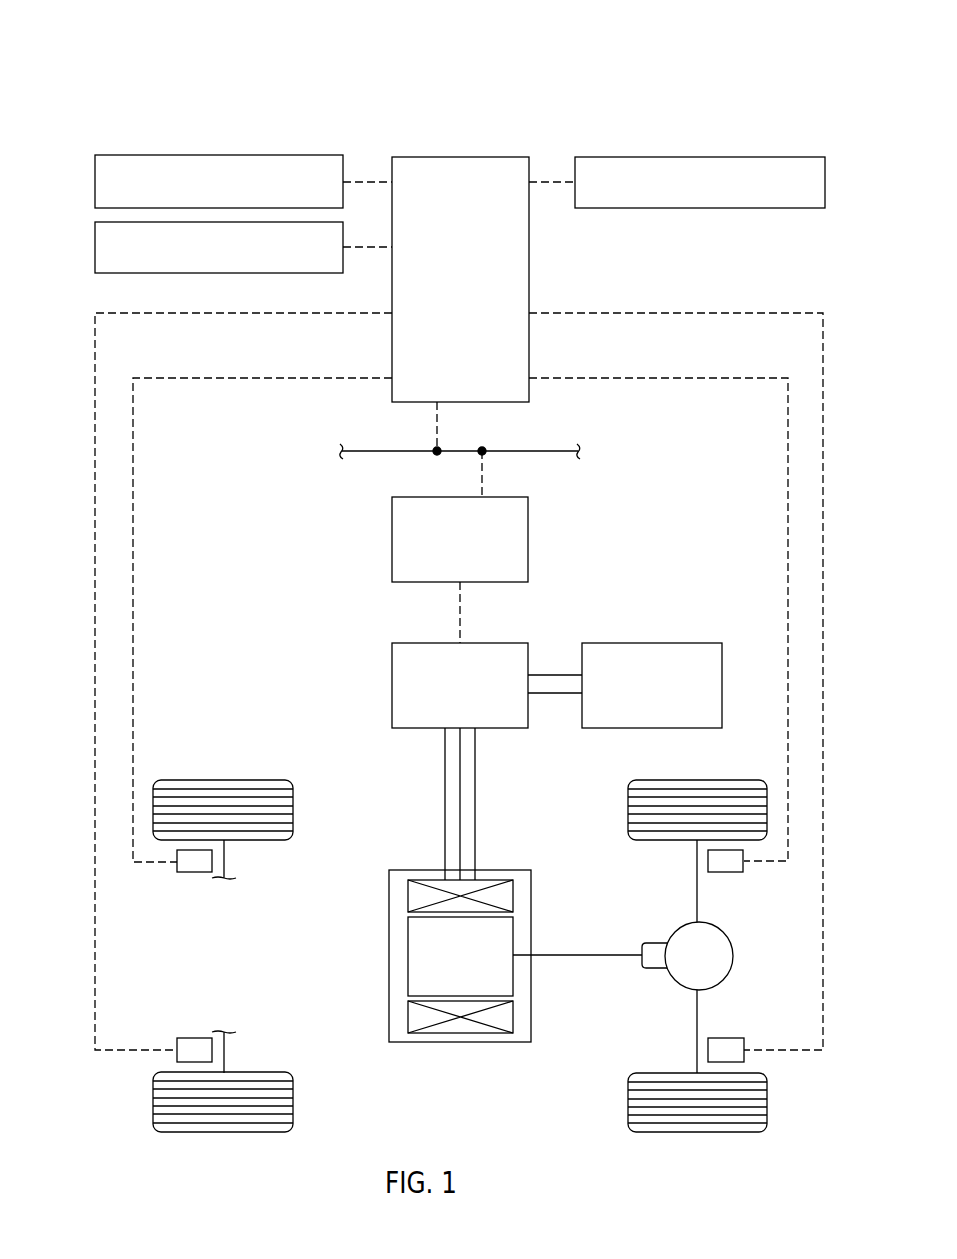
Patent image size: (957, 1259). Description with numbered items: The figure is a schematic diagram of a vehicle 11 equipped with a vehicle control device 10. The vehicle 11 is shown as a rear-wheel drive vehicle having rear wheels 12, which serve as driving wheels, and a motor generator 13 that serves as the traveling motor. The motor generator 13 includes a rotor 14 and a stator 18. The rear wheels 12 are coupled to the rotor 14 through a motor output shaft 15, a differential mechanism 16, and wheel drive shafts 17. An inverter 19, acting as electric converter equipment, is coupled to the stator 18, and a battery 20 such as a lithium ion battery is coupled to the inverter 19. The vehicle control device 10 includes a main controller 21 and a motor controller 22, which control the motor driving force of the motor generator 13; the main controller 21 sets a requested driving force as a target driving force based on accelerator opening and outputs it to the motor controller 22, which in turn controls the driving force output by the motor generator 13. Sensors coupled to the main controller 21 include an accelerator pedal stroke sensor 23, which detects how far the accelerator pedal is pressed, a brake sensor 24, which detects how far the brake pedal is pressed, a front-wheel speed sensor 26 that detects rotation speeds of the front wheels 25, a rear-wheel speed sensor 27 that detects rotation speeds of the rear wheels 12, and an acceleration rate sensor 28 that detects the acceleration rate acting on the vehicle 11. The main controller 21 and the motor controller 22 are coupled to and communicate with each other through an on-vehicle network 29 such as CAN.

The vehicle control device 10 is at (660, 93).
The vehicle 11 is at (762, 72).
The rear wheels 12 is at (628, 808).
The motor generator 13 is at (449, 1046).
The rotor 14 is at (408, 938).
The motor output shaft 15 is at (578, 954).
The differential mechanism 16 is at (733, 956).
The wheel drive shafts 17 is at (697, 892).
The stator 18 is at (408, 891).
The inverter 19 is at (392, 667).
The battery 20 is at (707, 643).
The main controller 21 is at (507, 157).
The motor controller 22 is at (392, 521).
The accelerator pedal stroke sensor 23 is at (95, 178).
The brake sensor 24 is at (95, 245).
The front wheels 25 is at (293, 802).
The front-wheel speed sensor 26 is at (193, 872).
The rear-wheel speed sensor 27 is at (745, 872).
The acceleration rate sensor 28 is at (825, 175).
The on-vehicle network 29 is at (552, 448).